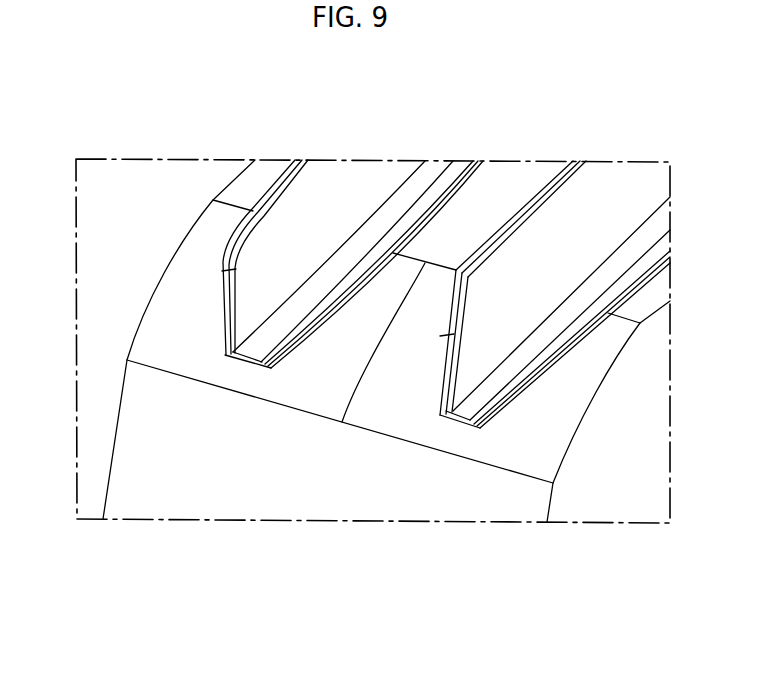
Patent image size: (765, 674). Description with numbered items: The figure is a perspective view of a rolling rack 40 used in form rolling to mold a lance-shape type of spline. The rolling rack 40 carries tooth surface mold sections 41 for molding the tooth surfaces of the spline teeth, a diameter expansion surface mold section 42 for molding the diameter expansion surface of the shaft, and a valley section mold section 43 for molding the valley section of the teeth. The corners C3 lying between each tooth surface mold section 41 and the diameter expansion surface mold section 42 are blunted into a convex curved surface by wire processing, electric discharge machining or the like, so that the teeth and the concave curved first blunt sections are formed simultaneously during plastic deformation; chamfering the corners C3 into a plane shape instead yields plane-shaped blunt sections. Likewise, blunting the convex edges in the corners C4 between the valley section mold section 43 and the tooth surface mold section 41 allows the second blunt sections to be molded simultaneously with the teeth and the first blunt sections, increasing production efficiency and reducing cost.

The rolling rack 40 is at (177, 225).
The tooth surface mold section 41 is at (440, 184).
The diameter expansion surface mold section 42 is at (371, 300).
The valley section mold section 43 is at (489, 188).
The corners C3 is at (440, 357).
The corners C4 is at (537, 195).